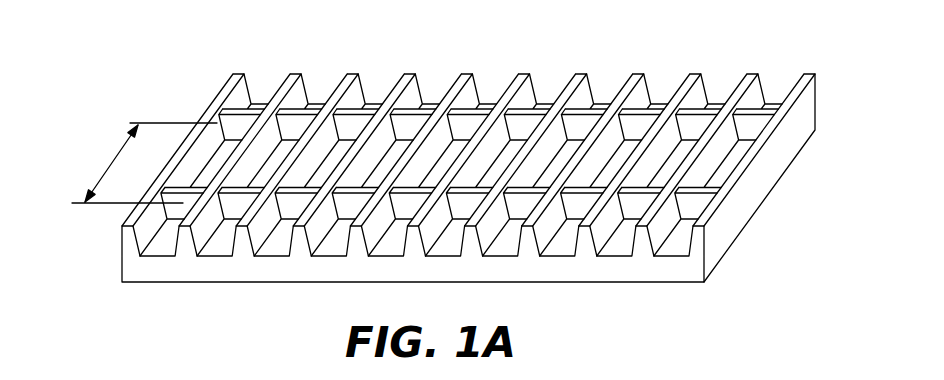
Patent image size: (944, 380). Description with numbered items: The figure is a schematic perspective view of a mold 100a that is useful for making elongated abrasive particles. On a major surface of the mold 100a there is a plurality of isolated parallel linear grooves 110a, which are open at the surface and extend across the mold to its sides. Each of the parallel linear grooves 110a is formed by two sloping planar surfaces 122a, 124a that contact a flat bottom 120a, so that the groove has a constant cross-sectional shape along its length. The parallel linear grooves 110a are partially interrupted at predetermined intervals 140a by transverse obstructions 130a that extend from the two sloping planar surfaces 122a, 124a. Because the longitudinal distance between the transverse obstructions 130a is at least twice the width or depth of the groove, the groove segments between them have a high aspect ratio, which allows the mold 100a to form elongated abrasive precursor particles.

The mold 100a is at (461, 174).
The parallel linear grooves 110a is at (258, 97).
The flat bottom 120a is at (370, 104).
The transverse obstructions 130a is at (473, 127).
The predetermined intervals 140a is at (115, 158).
The sloping planar surface 122a is at (134, 230).
The sloping planar surface 124a is at (174, 244).